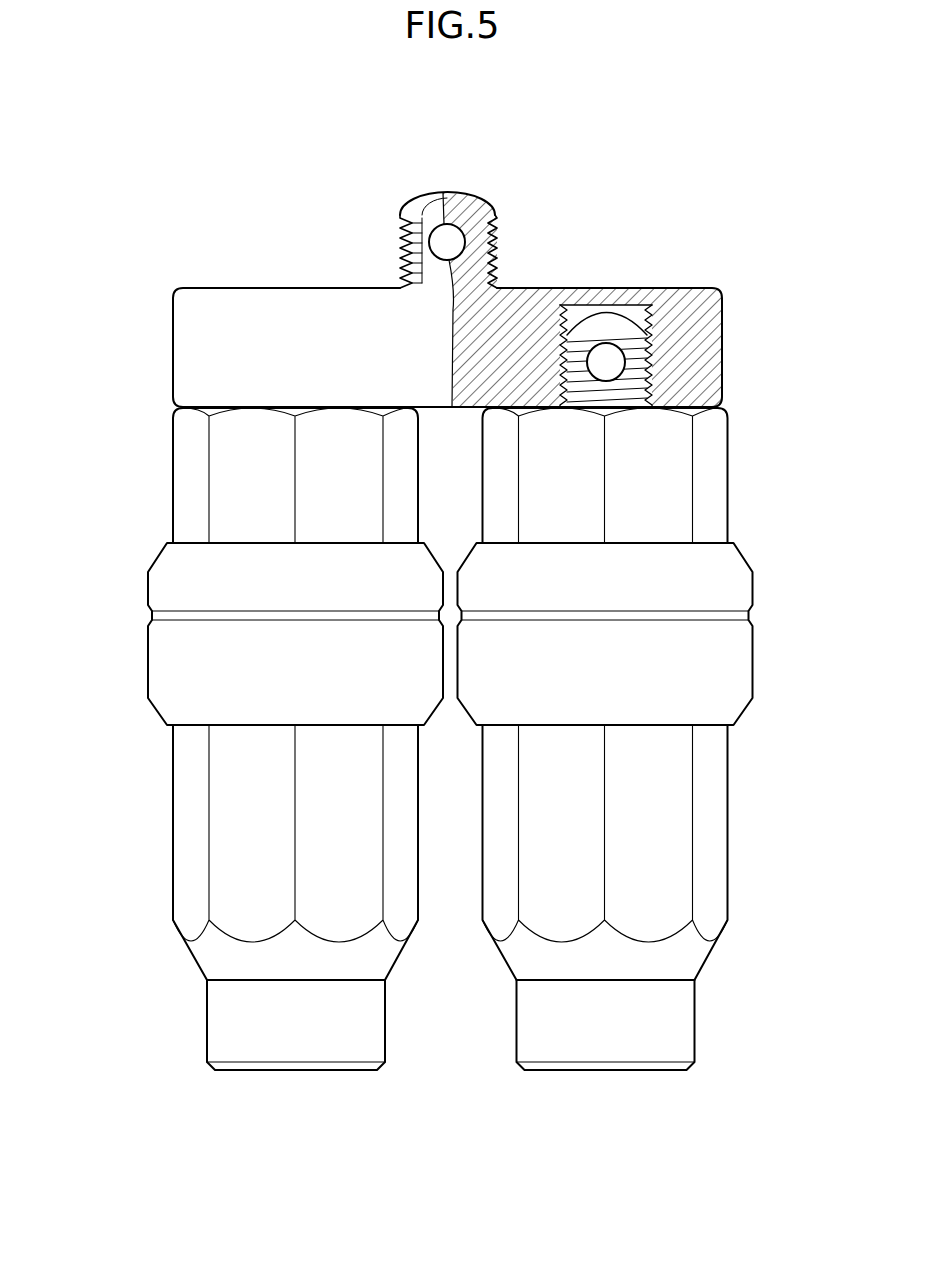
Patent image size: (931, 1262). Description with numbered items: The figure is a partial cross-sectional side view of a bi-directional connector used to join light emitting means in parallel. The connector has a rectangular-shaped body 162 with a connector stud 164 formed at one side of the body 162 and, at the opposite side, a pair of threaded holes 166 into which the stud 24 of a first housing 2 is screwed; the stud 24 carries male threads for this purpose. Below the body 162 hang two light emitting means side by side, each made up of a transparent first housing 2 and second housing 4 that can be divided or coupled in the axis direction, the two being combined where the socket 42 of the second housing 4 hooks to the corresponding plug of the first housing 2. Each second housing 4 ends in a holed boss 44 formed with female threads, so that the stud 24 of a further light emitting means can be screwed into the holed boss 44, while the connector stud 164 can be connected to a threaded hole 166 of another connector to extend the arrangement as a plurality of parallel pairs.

The body 162 is at (290, 310).
The connector stud 164 is at (476, 195).
The threaded hole 166 is at (633, 306).
The stud 24 is at (637, 365).
The first housing 2 is at (230, 483).
The socket 42 is at (203, 659).
The second housing 4 is at (235, 832).
The holed boss 44 is at (228, 1022).